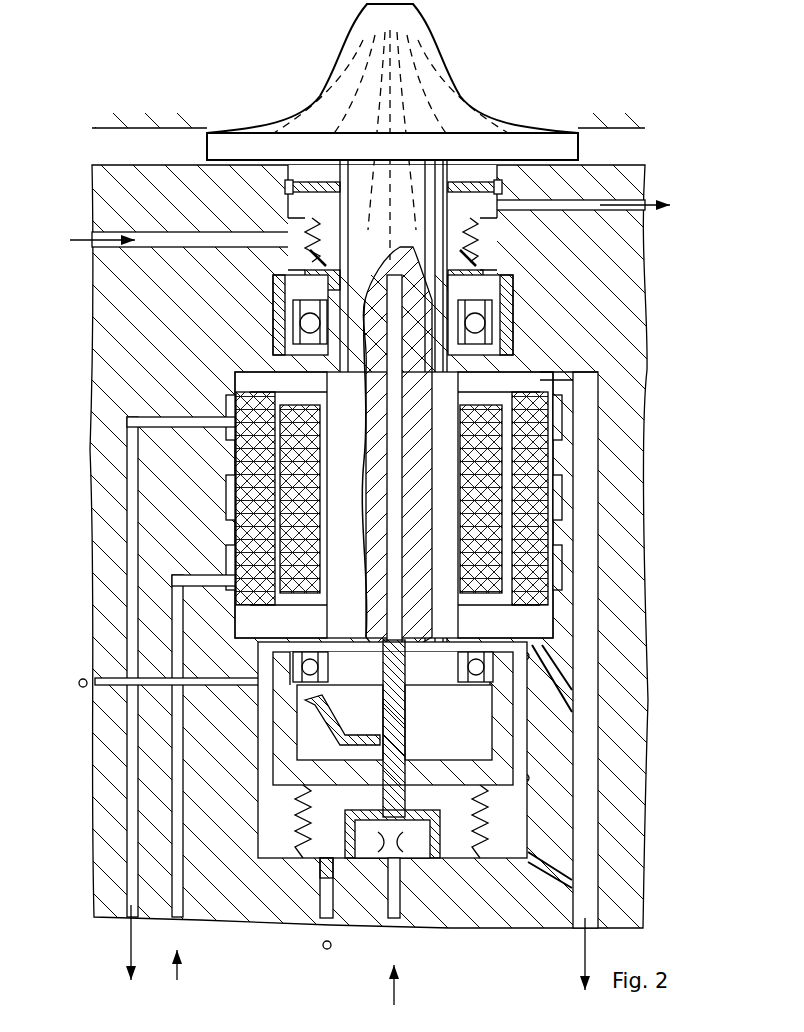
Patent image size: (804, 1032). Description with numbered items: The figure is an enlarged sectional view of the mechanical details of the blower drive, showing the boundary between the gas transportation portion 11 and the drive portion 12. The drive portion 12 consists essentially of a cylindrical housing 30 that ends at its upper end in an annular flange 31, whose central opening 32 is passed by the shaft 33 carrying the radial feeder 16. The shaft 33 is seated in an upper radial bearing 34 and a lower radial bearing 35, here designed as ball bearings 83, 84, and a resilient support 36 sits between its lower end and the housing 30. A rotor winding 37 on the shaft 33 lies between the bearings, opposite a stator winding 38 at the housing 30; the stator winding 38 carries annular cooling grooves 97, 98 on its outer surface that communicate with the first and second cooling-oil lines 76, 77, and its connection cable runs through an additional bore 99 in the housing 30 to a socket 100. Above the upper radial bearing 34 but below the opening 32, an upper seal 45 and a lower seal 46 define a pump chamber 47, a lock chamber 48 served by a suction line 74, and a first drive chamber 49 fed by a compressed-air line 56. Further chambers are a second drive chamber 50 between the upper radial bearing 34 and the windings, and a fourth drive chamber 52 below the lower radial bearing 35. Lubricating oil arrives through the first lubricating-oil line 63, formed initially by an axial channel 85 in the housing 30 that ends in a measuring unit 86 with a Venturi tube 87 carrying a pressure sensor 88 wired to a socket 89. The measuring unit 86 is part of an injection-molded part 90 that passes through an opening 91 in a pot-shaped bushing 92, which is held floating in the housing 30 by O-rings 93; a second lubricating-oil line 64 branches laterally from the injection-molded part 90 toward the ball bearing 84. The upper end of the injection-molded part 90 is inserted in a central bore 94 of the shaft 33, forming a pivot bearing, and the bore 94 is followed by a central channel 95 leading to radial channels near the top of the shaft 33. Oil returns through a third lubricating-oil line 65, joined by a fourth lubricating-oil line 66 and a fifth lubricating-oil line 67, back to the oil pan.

The gas transportation portion 11 is at (598, 55).
The drive portion 12 is at (660, 365).
The radial feeder 16 is at (440, 42).
The cylindrical housing 30 is at (610, 432).
The annular flange 31 is at (625, 188).
The opening 32 is at (318, 178).
The shaft 33 is at (364, 520).
The upper radial bearing 34 is at (333, 348).
The lower radial bearing 35 is at (472, 636).
The resilient support 36 is at (482, 848).
The rotor winding 37 is at (300, 592).
The stator winding 38 is at (248, 376).
The upper seal 45 is at (356, 199).
The lower seal 46 is at (356, 258).
The pump chamber 47 is at (470, 178).
The lock chamber 48 is at (456, 230).
The first drive chamber 49 is at (492, 256).
The second drive chamber 50 is at (348, 433).
The fourth drive chamber 52 is at (392, 750).
The compressed-air line 56 is at (135, 243).
The first lubricating-oil line 63 is at (382, 566).
The second lubricating-oil line 64 is at (325, 722).
The third lubricating-oil line 65 is at (580, 496).
The fourth lubricating-oil line 66 is at (552, 668).
The fifth lubricating-oil line 67 is at (548, 868).
The suction line 74 is at (615, 210).
The first cooling-oil line 76 is at (172, 797).
The second cooling-oil line 77 is at (134, 584).
The ball bearing 83 is at (325, 323).
The ball bearing 84 is at (328, 676).
The axial channel 85 is at (405, 890).
The measuring unit 86 is at (432, 838).
The Venturi tube 87 is at (405, 850).
The pressure sensor 88 is at (372, 850).
The socket 89 is at (322, 948).
The injection-molded part 90 is at (405, 740).
The opening 91 is at (360, 788).
The bushing 92 is at (288, 775).
The O-rings 93 is at (526, 652).
The central bore 94 is at (405, 696).
The central channel 95 is at (388, 400).
The annular cooling groove 97 is at (218, 410).
The annular cooling groove 98 is at (232, 556).
The additional bore 99 is at (108, 698).
The socket 100 is at (83, 679).